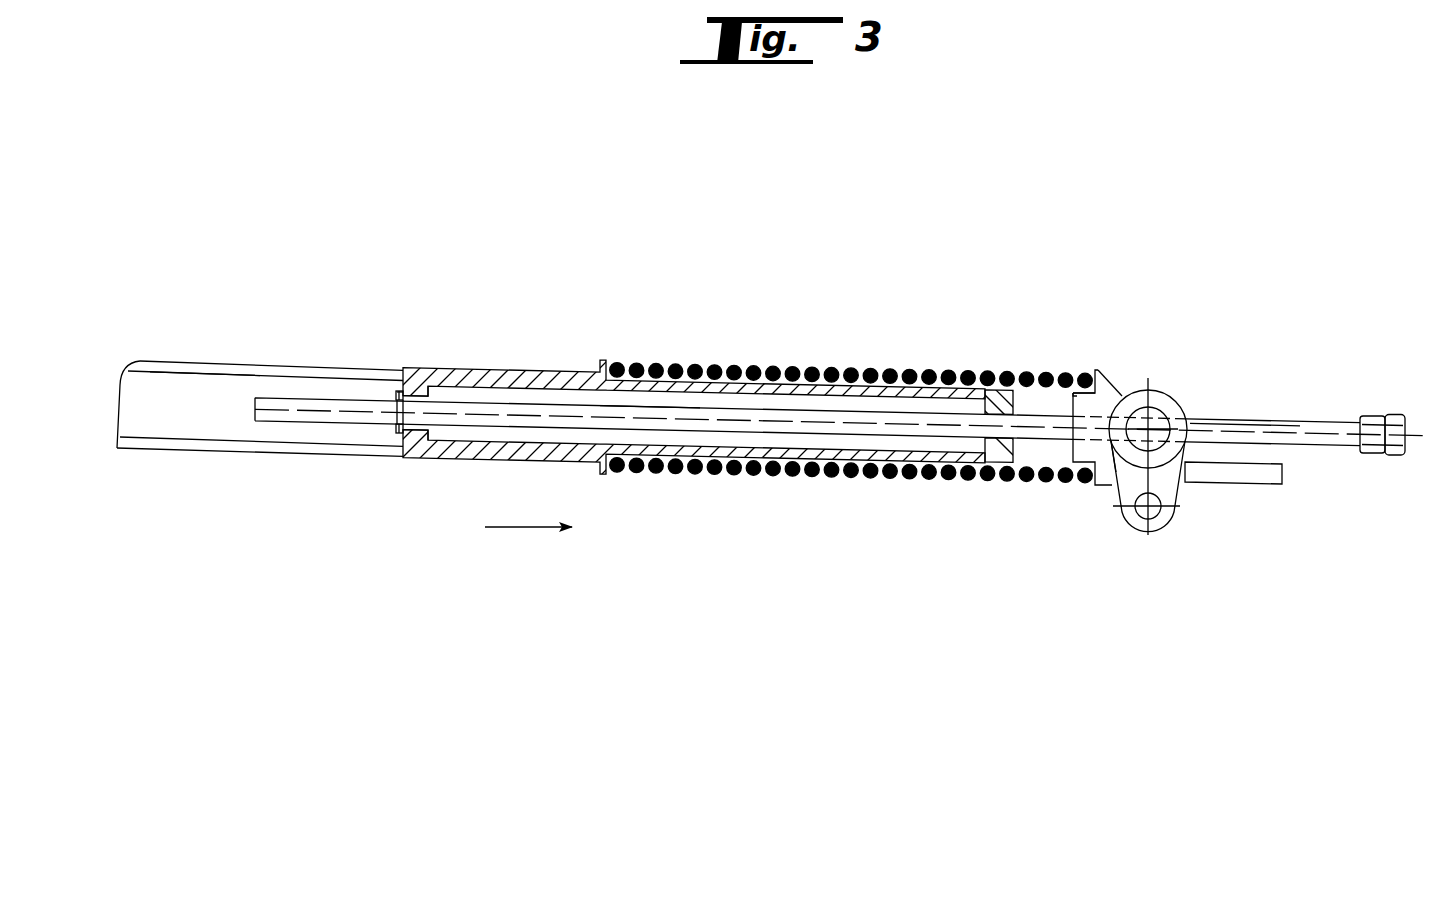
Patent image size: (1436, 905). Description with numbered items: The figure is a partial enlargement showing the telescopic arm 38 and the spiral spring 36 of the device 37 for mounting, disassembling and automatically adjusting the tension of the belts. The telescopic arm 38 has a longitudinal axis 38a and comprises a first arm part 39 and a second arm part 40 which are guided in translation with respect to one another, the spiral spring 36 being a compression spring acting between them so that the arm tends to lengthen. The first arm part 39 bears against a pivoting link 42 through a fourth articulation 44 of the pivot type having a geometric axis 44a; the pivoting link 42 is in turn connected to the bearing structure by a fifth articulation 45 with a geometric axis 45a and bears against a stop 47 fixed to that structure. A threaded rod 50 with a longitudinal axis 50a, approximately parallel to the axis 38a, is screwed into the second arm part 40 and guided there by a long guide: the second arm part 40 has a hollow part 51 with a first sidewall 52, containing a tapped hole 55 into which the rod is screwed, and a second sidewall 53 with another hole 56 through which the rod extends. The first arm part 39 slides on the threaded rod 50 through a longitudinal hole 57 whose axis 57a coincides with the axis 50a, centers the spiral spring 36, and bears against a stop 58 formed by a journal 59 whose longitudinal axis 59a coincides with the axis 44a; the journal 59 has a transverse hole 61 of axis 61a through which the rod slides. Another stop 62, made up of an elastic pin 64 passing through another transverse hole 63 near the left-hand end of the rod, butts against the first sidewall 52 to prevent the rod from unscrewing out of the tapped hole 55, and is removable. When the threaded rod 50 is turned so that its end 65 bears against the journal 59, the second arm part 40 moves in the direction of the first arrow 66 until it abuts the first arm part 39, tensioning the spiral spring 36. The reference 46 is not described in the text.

The spiral spring 36 is at (790, 371).
The device for the mounting/disassembly and automatic tension adjustment of the belt 37 is at (478, 458).
The telescopic arm 38 is at (401, 457).
The longitudinal axis of the telescopic arm 38a is at (200, 404).
The first arm part 39 is at (1115, 377).
The second arm part 40 is at (192, 448).
The pivoting link 42 is at (1170, 488).
The fourth articulation 44 is at (1163, 410).
The geometric axis of the fourth articulation 44a is at (1168, 420).
The fifth articulation 45 is at (1155, 512).
The geometric axis of the fifth articulation 45a is at (1147, 508).
The tube bore 46 is at (205, 324).
The stop 47 is at (1284, 475).
The threaded rod 50 is at (309, 404).
The longitudinal axis of the threaded rod 50a is at (455, 340).
The hollow part 51 is at (518, 393).
The first sidewall 52 is at (418, 378).
The second sidewall 53 is at (1000, 398).
The tapped hole 55 is at (412, 426).
The hole 56 is at (1000, 462).
The longitudinal hole 57 is at (1098, 415).
The longitudinal axis of the longitudinal hole 57a is at (602, 345).
The stop 58 is at (1161, 403).
The journal 59 is at (1123, 460).
The longitudinal axis of the journal 59a is at (1241, 442).
The transverse hole 61 is at (1160, 442).
The longitudinal axis of the transverse hole 61a is at (734, 361).
The other stop 62 is at (396, 432).
The other transverse hole 63 is at (396, 404).
The elastic pin 64 is at (401, 393).
The end of the threaded rod 65 is at (1392, 415).
The first arrow 66 is at (512, 527).